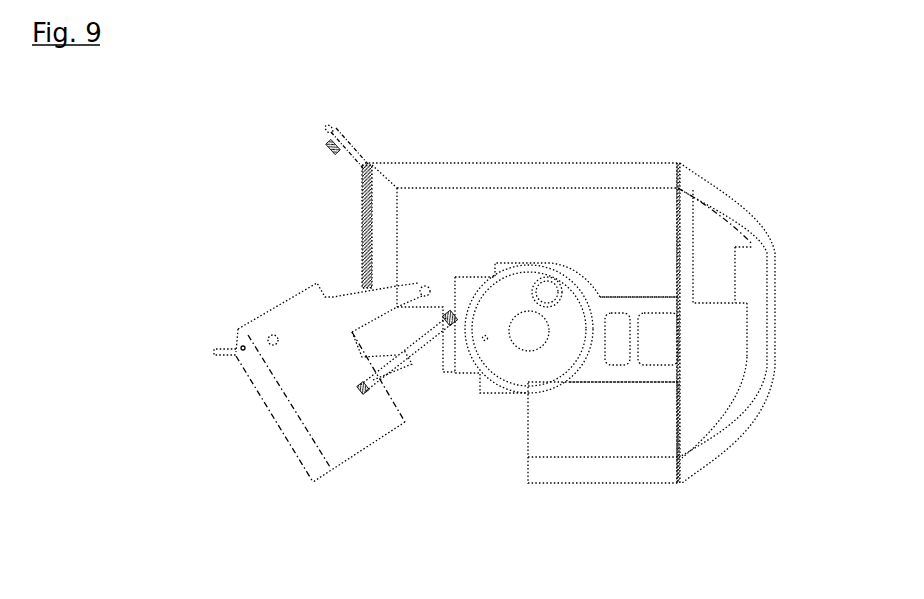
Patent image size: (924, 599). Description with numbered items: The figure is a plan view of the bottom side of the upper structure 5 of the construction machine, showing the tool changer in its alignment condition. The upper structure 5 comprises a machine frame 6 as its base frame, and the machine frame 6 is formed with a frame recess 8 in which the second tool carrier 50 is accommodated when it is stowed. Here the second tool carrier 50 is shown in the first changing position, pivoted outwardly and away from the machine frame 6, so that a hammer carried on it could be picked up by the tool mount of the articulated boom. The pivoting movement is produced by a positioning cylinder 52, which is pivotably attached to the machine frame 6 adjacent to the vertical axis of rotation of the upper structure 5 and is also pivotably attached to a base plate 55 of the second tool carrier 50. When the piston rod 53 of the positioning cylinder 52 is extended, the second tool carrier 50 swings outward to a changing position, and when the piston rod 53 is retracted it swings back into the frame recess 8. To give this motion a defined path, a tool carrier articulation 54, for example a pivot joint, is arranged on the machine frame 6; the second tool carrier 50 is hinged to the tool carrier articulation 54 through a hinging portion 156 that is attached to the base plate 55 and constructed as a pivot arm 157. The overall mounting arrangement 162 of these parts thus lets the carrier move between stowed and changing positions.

The upper structure 5 is at (766, 151).
The machine frame 6 is at (625, 218).
The frame recess 8 is at (477, 437).
The second tool carrier 50 is at (346, 437).
The positioning cylinder 52 is at (421, 342).
The piston rod 53 is at (376, 381).
The tool carrier articulation 54 is at (423, 285).
The base plate 55 is at (313, 372).
The hinging portion 156 is at (355, 312).
The pivot arm 157 is at (385, 300).
The mounting arrangement 162 is at (211, 393).